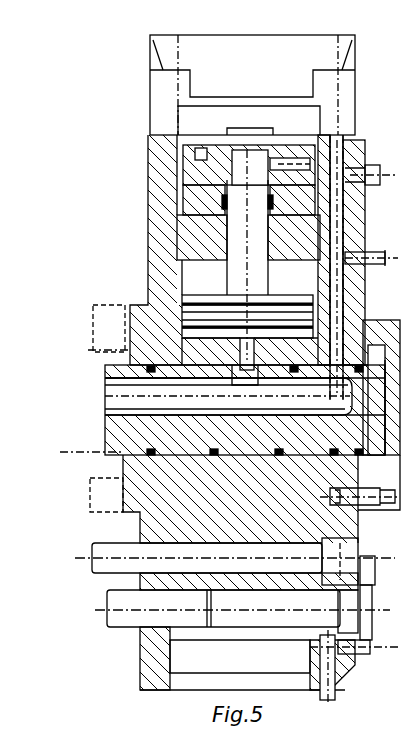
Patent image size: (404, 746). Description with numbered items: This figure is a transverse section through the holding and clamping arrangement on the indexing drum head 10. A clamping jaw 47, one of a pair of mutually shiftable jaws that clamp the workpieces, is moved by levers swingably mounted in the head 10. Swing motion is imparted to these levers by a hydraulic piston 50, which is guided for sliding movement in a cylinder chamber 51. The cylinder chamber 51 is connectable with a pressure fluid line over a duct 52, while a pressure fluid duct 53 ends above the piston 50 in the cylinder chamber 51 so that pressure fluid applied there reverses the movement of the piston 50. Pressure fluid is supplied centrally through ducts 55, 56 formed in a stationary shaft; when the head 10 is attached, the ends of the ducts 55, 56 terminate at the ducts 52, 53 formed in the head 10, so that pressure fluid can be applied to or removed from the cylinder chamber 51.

The indexing drum head 10 is at (135, 492).
The clamping jaw 47 is at (158, 106).
The hydraulic piston 50 is at (240, 264).
The cylinder chamber 51 is at (185, 350).
The duct 52 is at (250, 353).
The pressure fluid duct 53 is at (345, 298).
The duct 55 is at (140, 384).
The duct 56 is at (120, 408).